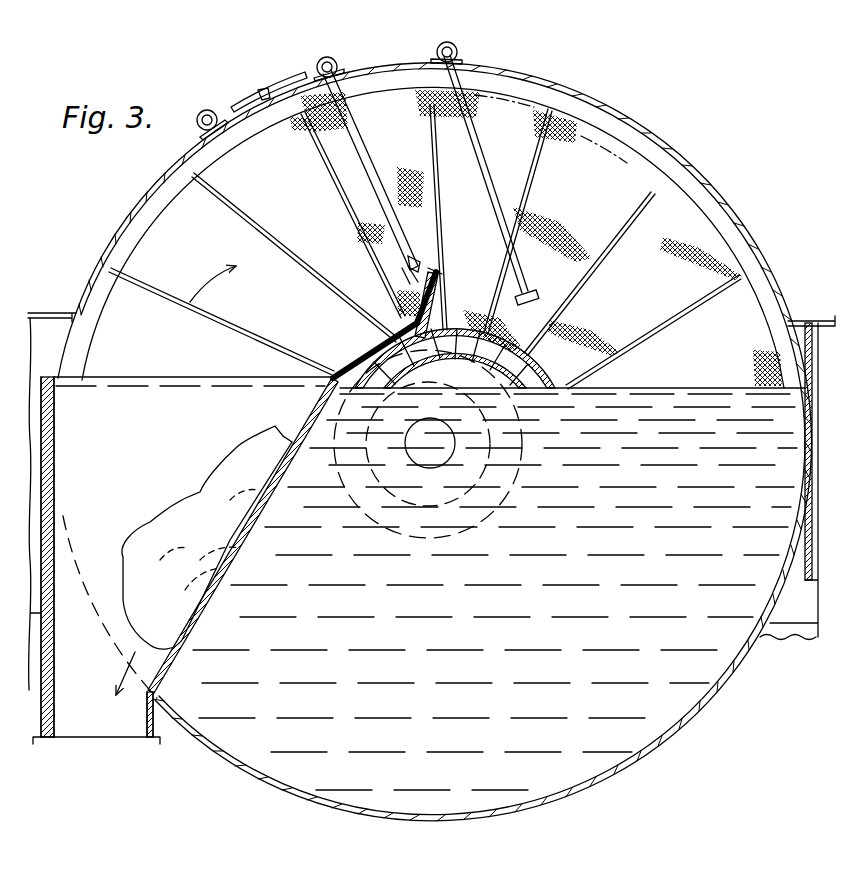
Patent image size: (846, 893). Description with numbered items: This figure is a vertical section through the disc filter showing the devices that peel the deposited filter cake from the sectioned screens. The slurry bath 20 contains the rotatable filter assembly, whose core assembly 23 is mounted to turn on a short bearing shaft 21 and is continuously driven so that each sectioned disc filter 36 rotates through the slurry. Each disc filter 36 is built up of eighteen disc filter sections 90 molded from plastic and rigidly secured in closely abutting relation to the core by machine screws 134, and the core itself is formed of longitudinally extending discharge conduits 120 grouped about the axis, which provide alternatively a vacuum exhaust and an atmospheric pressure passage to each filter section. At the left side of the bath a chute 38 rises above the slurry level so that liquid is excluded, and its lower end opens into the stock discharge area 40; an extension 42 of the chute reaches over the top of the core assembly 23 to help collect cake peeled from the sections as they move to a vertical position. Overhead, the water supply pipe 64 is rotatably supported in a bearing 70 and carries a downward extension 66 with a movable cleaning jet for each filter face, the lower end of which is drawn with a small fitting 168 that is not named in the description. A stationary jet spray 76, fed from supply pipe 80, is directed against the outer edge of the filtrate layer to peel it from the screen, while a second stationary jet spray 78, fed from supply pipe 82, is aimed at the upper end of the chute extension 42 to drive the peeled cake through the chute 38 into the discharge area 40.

The slurry bath 20 is at (218, 766).
The bearing shaft 21 is at (430, 466).
The core assembly 23 is at (512, 492).
The sectioned disc filter 36 is at (711, 216).
The chute 38 is at (219, 606).
The stock discharge area 40 is at (90, 740).
The chute extension 42 is at (387, 323).
The water supply pipe 64 is at (459, 52).
The downward extension 66 is at (488, 172).
The bearing 70 is at (436, 52).
The stationary jet spray 76 is at (246, 97).
The stationary jet spray 78 is at (362, 150).
The supply pipe 80 is at (207, 109).
The supply pipe 82 is at (317, 69).
The disc filter section 90 is at (598, 134).
The discharge conduit 120 is at (520, 364).
The machine screw 134 is at (446, 320).
The bracket 168 is at (534, 299).